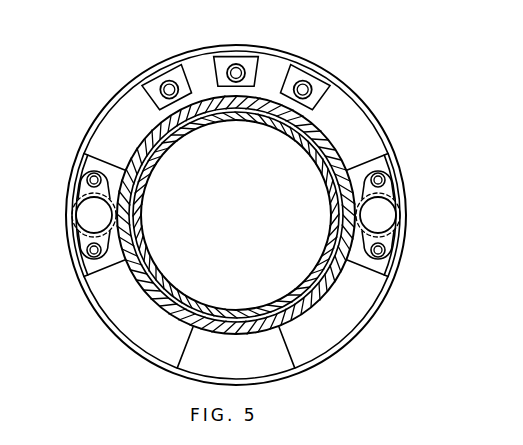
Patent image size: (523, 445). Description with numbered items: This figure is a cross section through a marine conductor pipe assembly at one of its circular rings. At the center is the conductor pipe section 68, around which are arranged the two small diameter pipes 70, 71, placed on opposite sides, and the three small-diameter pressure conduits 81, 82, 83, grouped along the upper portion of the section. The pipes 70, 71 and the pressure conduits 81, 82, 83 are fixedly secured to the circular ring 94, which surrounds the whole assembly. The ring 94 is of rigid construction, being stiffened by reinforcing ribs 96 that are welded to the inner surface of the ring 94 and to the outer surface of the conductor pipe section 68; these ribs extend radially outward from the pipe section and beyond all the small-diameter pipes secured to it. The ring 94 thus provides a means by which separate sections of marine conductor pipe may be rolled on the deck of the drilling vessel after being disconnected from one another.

The conductor pipe section 68 is at (216, 326).
The small diameter pipe 70 is at (80, 208).
The small diameter pipe 71 is at (388, 207).
The pressure conduit 81 is at (171, 80).
The pressure conduit 82 is at (241, 64).
The pressure conduit 83 is at (306, 81).
The circular ring 94 is at (365, 104).
The reinforcing rib 96 is at (302, 356).